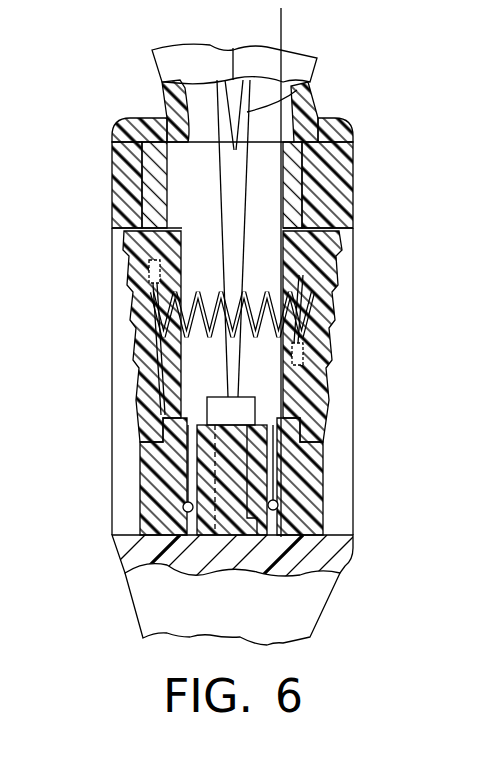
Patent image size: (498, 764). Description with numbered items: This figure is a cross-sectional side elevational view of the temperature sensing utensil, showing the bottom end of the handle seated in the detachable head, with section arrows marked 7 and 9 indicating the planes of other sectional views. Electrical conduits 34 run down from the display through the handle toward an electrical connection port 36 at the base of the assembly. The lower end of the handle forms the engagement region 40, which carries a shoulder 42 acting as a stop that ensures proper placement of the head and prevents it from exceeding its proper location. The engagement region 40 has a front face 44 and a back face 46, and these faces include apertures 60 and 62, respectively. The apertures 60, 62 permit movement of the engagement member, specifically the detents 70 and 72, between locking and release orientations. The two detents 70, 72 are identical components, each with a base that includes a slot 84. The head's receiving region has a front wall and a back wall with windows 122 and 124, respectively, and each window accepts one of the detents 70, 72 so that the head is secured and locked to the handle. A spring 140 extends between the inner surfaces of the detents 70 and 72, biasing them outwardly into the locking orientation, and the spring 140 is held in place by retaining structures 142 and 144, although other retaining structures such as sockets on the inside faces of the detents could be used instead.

The section line 7- 7 is at (76, 488).
The section line 9- 9 is at (272, 18).
The electrical conduits 34 is at (247, 162).
The electrical connection port 36 is at (240, 538).
The engagement region 40 is at (315, 183).
The shoulder 42 is at (345, 124).
The front face 44 is at (150, 455).
The back face 46 is at (312, 465).
The aperture 60 is at (160, 228).
The aperture 62 is at (322, 230).
The detent 70 is at (140, 326).
The detent 72 is at (333, 332).
The slot 84 is at (188, 512).
The window 122 is at (125, 400).
The window 124 is at (338, 400).
The spring 140 is at (322, 286).
The retaining structure 142 is at (148, 272).
The retaining structure 144 is at (303, 366).